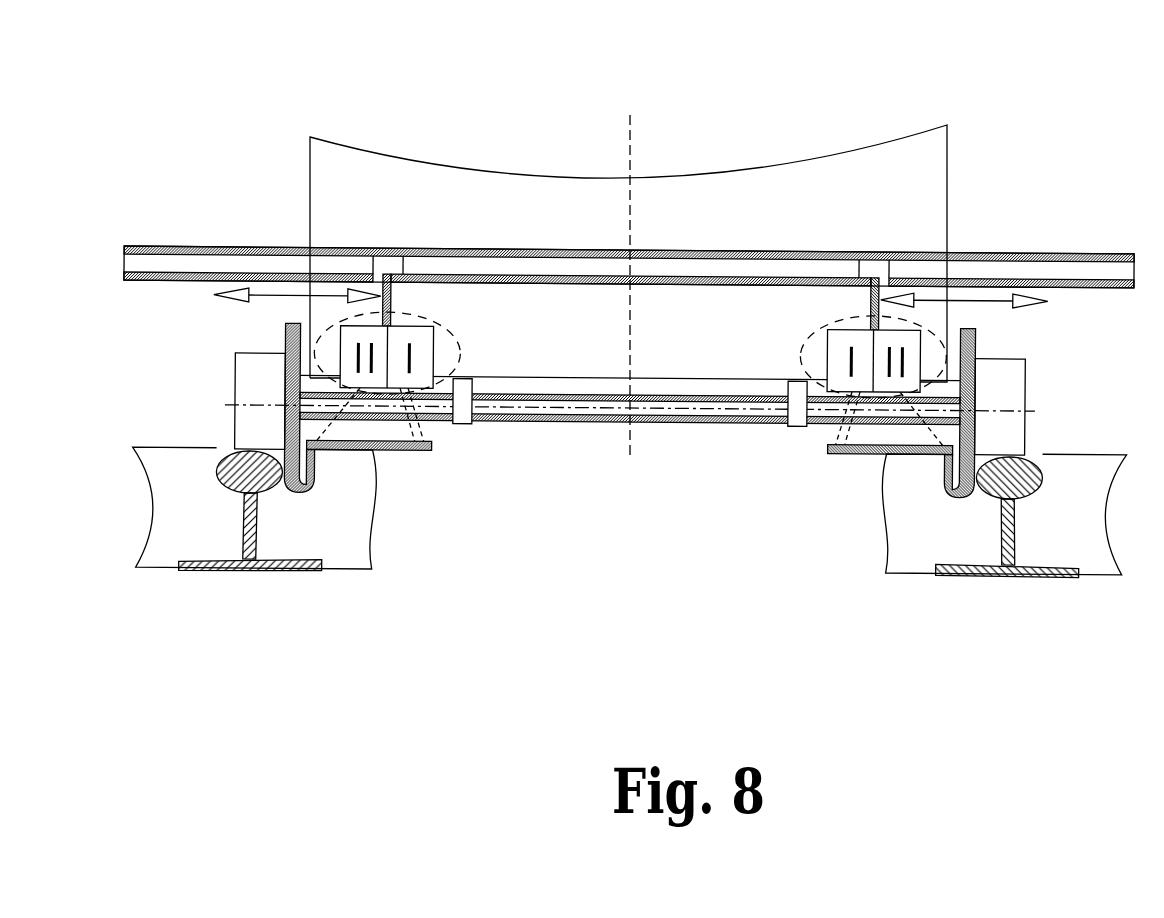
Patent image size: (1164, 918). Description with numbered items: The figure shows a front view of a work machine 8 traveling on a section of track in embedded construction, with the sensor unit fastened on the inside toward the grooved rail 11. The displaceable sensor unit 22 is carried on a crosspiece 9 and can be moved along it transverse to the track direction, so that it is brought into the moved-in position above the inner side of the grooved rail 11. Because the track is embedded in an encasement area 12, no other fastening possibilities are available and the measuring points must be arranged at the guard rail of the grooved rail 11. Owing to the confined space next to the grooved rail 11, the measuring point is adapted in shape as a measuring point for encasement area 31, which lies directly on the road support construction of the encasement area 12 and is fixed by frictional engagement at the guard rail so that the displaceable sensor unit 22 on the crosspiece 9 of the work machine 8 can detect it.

The work machine 8 is at (428, 160).
The crosspiece 9 is at (1003, 255).
The displaceable sensor unit 22 is at (352, 311).
The measuring point for encasement area 31 is at (405, 452).
The encasement area 12 is at (345, 490).
The grooved rail 11 is at (273, 492).